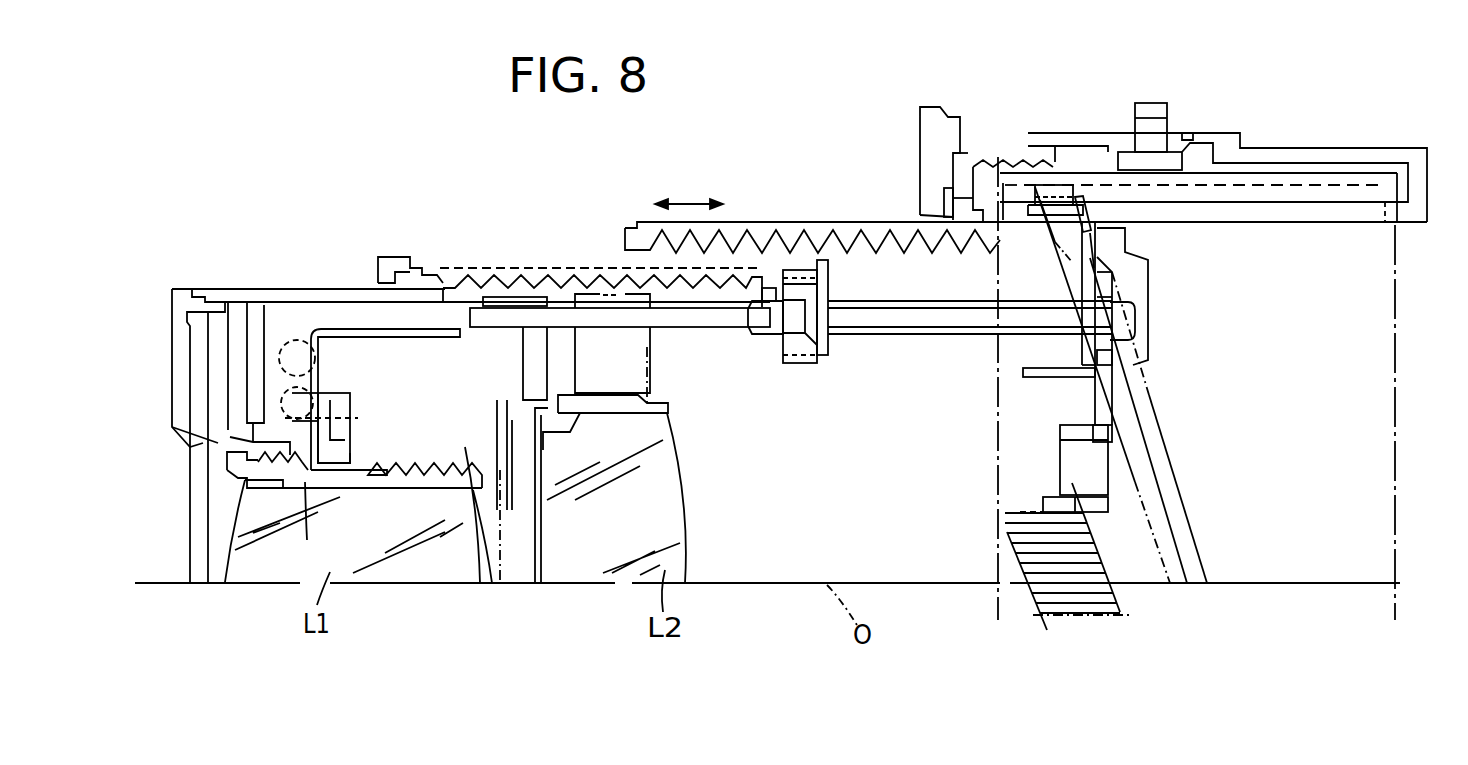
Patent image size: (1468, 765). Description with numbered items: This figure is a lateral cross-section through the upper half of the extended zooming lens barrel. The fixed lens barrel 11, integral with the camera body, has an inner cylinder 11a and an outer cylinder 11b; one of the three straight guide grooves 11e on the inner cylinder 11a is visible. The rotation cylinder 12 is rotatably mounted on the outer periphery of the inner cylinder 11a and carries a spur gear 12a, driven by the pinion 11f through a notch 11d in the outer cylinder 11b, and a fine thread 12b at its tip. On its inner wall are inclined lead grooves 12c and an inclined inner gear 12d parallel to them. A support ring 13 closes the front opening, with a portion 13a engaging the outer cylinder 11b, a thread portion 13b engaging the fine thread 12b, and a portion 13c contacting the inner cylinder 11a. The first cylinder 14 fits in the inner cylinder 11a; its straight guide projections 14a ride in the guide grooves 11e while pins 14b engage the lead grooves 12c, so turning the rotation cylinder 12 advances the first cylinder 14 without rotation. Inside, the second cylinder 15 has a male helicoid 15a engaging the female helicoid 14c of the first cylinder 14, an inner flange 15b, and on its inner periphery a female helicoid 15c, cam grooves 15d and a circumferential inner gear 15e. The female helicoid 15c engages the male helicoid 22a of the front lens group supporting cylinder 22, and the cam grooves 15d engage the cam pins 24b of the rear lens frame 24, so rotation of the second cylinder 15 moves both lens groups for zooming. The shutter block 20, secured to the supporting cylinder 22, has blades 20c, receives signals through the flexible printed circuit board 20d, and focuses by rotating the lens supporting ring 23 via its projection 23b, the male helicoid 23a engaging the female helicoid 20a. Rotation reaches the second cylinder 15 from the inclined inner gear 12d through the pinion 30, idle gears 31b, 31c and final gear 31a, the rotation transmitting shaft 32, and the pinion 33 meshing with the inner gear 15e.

The fixed lens barrel 11 is at (1422, 138).
The inner cylinder 11a is at (1268, 224).
The outer cylinder 11b is at (1228, 142).
The notch 11d is at (1182, 137).
The straight guide grooves 11e is at (1362, 215).
The pinion 11f is at (1162, 120).
The rotation cylinder 12 is at (1310, 178).
The spur gear 12a is at (1128, 168).
The fine thread 12b is at (1025, 163).
The lead grooves 12c is at (1155, 428).
The inclined inner gear 12d is at (1102, 615).
The support ring 13 is at (980, 126).
The portion engaging the outer cylinder 13a is at (1055, 147).
The thread portion 13b is at (1000, 163).
The portion contacting the inner cylinder 13c is at (962, 205).
The first cylinder 14 is at (813, 228).
The straight guide projections 14a is at (1087, 210).
The pin 14b is at (1065, 183).
The female helicoid 14c is at (883, 255).
The second cylinder 15 is at (600, 294).
The male helicoid 15a is at (716, 250).
The inner flange 15b is at (778, 295).
The female helicoid 15c is at (527, 280).
The cam grooves 15d is at (553, 270).
The circumferential inner gear 15e is at (797, 270).
The shutter block 20 is at (490, 533).
The female helicoid 20a is at (213, 457).
The blades 20c is at (502, 545).
The flexible printed circuit board 20d is at (333, 327).
The front lens group supporting cylinder 22 is at (250, 290).
The male helicoid 22a is at (447, 283).
The lens supporting ring 23 is at (302, 483).
The male helicoid 23a is at (462, 448).
The projection 23b is at (353, 403).
The rear lens frame 24 is at (628, 403).
The cam pin 24b is at (617, 286).
The pinion 30 is at (1050, 573).
The final gear 31a is at (1103, 308).
The idle gear 31b is at (1108, 385).
The idle gear 31c is at (1097, 452).
The rotation transmitting shaft 32 is at (907, 333).
The pinion 33 is at (817, 363).